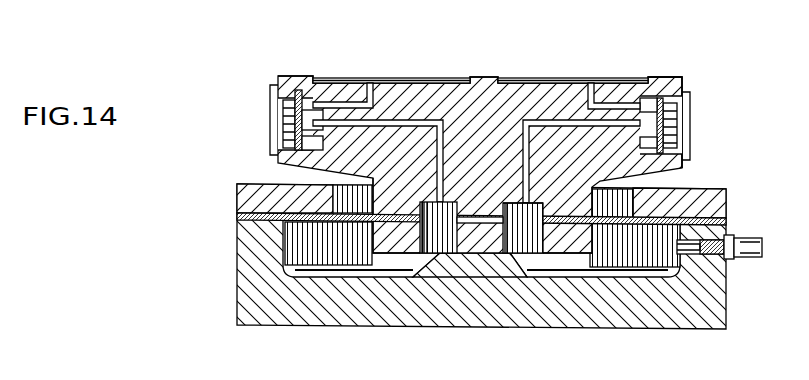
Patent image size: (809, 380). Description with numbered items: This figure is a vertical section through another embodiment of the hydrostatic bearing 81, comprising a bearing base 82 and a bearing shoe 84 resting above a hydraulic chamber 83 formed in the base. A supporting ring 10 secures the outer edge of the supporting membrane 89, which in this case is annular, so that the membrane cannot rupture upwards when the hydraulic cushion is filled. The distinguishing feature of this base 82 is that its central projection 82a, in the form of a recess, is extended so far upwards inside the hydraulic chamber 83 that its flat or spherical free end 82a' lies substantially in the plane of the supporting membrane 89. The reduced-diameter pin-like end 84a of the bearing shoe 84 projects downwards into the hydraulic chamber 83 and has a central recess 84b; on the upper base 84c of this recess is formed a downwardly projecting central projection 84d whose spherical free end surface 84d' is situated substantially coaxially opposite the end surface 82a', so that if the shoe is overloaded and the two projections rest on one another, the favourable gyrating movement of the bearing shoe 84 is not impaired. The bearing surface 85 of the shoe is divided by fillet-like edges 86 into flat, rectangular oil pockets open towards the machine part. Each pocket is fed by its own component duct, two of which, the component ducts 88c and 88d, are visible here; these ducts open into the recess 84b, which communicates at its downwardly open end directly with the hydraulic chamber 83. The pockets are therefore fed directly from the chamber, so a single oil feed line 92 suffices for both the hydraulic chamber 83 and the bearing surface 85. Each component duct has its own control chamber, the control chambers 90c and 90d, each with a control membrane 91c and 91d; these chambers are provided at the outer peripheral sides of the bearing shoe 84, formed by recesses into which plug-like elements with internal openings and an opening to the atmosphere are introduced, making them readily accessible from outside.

The supporting ring 10 is at (248, 201).
The actuator assembly 81 is at (702, 75).
The bearing base 82 is at (248, 277).
The central projection 82a is at (470, 307).
The free end 82a' is at (538, 187).
The hydraulic chamber 83 is at (319, 275).
The bearing shoe 84 is at (308, 163).
The pin-like end 84a is at (382, 213).
The central recess 84b is at (432, 256).
The upper base 84c is at (427, 201).
The central projection 84d is at (505, 189).
The spherical free end surface 84d' is at (482, 244).
The bearing surface 85 is at (369, 72).
The fillet-like edges 86 is at (660, 76).
The component duct 88c is at (402, 124).
The component duct 88d is at (540, 123).
The supporting membrane 89 is at (239, 224).
The control chamber 90c is at (275, 112).
The control chamber 90d is at (694, 117).
The control membrane 91c is at (281, 128).
The control membrane 91d is at (690, 137).
The oil feed line 92 is at (740, 238).